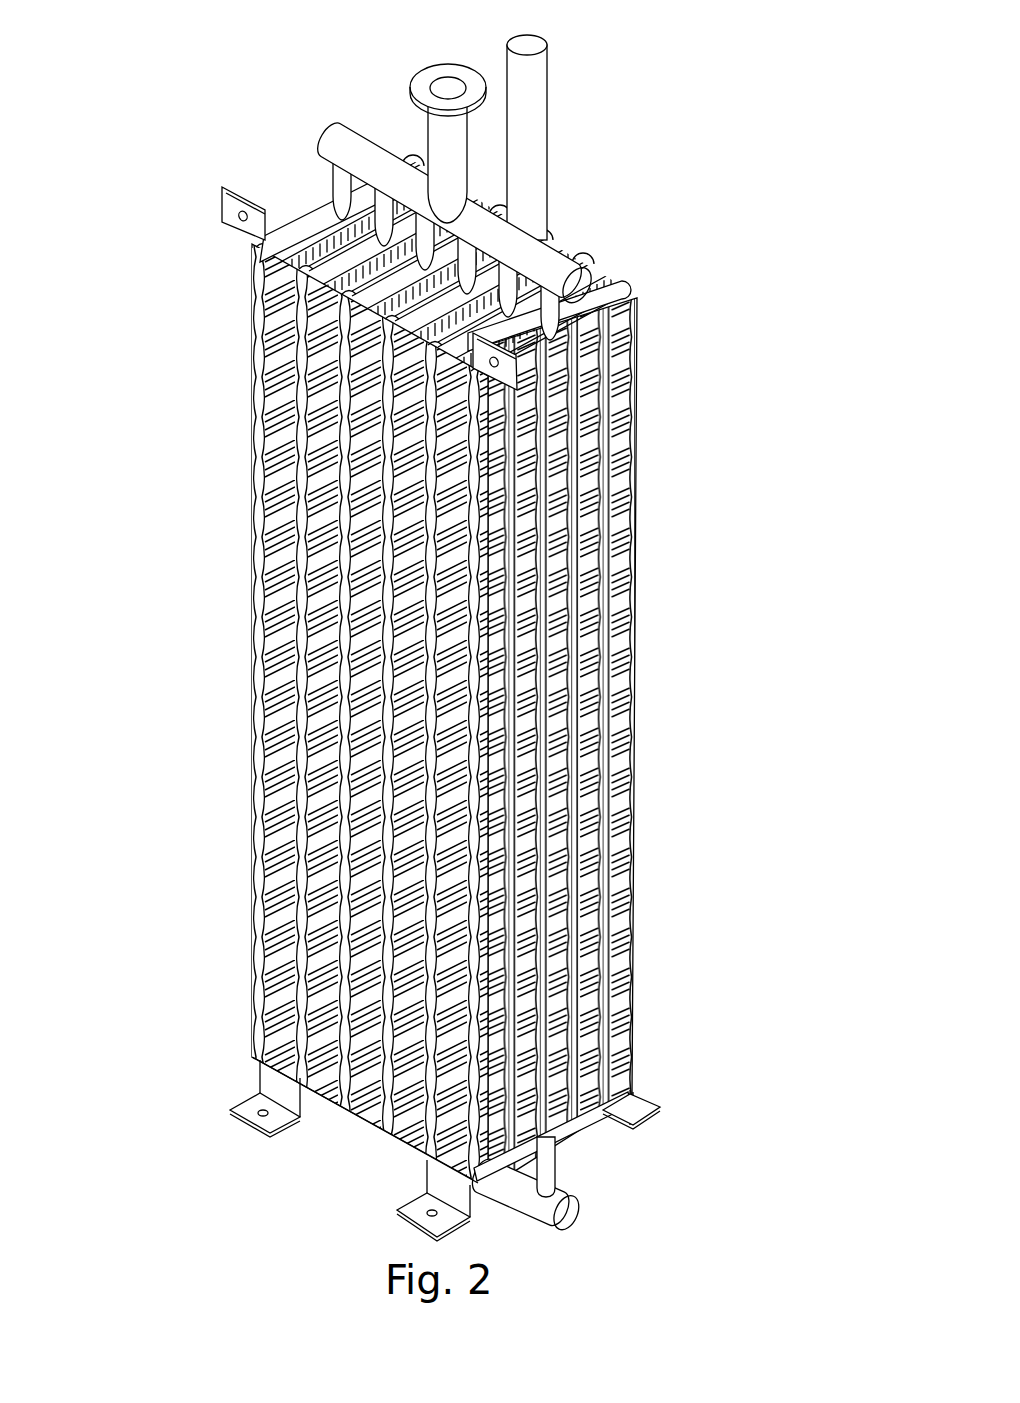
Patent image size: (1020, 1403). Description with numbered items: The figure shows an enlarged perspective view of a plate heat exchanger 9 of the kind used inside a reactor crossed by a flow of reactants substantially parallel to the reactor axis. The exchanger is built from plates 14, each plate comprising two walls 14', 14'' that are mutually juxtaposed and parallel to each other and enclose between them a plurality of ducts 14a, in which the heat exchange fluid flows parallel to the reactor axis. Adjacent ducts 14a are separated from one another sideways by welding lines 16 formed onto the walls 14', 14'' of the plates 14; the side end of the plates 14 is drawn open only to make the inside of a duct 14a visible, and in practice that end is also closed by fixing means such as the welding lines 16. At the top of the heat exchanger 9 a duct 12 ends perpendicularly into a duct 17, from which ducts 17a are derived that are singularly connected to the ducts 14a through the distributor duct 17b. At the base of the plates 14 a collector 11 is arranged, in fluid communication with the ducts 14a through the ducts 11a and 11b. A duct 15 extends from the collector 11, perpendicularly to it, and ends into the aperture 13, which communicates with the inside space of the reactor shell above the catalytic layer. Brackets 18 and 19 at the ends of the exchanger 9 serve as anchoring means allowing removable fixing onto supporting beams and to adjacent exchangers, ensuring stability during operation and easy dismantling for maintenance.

The heat exchanger 9 is at (383, 664).
The collector 11 is at (515, 1186).
The duct 11a is at (552, 1162).
The duct 11b is at (576, 1120).
The duct 12 is at (445, 150).
The aperture 13 is at (533, 38).
The plate 14 is at (443, 652).
The wall 14' is at (244, 926).
The wall 14'' is at (265, 959).
The duct 14a is at (255, 598).
The duct 15 is at (523, 136).
The welding line 16 is at (602, 480).
The duct 17 is at (562, 272).
The duct 17a is at (330, 183).
The distributor duct 17b is at (283, 178).
The bracket 18 is at (650, 1095).
The bracket 19 is at (220, 205).